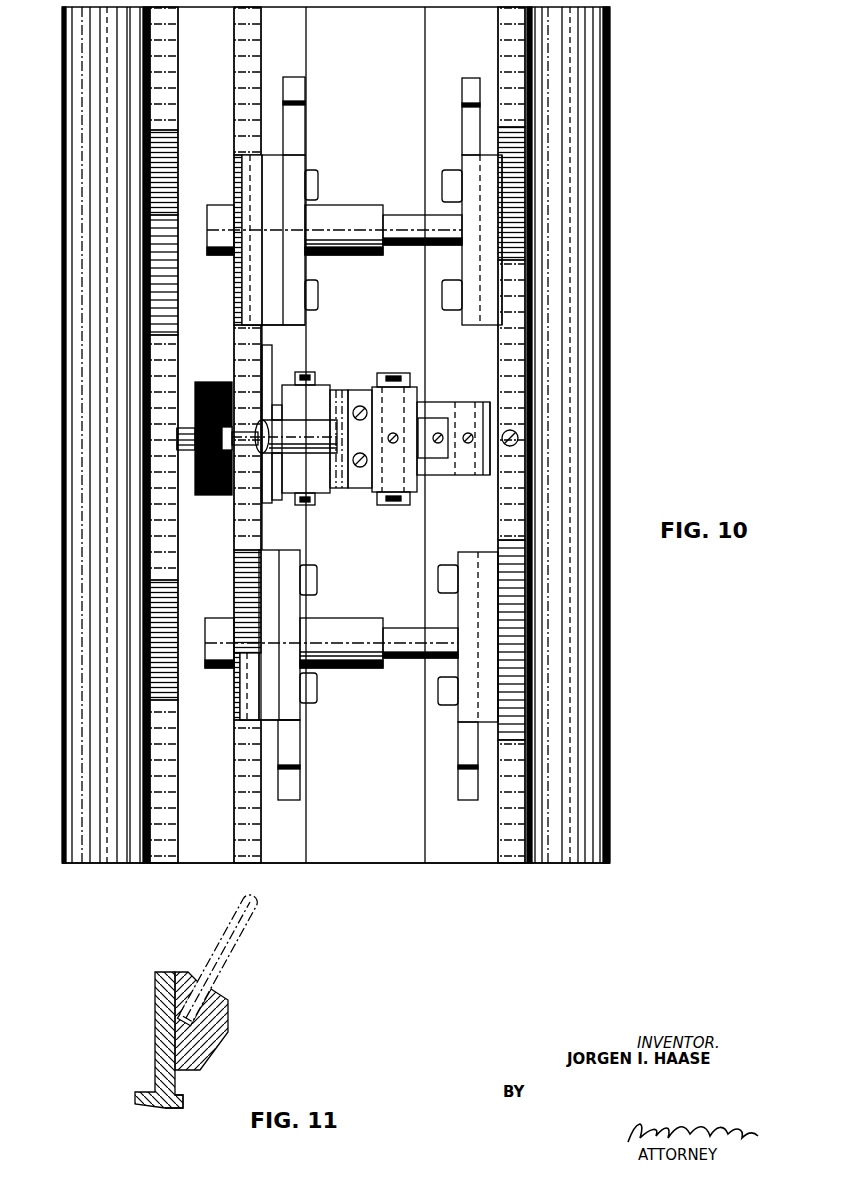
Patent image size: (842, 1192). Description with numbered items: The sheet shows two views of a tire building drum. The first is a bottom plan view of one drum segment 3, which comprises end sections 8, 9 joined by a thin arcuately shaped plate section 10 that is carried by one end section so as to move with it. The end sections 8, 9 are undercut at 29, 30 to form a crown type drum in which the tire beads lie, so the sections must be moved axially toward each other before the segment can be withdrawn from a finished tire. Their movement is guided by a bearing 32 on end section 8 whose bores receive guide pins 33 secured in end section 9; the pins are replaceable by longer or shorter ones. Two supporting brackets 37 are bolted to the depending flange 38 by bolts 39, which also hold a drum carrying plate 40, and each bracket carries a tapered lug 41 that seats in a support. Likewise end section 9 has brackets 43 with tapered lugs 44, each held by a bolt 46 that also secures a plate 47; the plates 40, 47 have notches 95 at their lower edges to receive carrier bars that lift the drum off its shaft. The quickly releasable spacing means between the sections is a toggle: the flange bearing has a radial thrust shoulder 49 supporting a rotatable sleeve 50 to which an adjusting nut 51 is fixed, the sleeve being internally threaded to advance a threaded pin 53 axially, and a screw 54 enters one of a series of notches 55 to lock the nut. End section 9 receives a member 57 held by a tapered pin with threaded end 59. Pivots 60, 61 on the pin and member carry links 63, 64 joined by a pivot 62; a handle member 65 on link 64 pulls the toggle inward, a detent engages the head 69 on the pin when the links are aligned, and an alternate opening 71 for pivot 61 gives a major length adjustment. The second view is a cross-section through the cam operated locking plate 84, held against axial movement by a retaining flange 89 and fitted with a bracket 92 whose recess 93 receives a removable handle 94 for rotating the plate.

In FIG. 10, the drum segment 3 is at (610, 222).
In FIG. 10, the end section 8 is at (72, 145).
In FIG. 10, the end section 9 is at (602, 145).
In FIG. 10, the plate section 10 is at (378, 858).
In FIG. 10, the undercut 29 is at (120, 523).
In FIG. 10, the undercut 30 is at (540, 685).
In FIG. 10, the bearing 32 is at (350, 245).
In FIG. 10, the guide pin 33 is at (398, 238).
In FIG. 10, the supporting bracket 37 is at (278, 313).
In FIG. 10, the depending flange 38 is at (243, 330).
In FIG. 10, the bolt 39 is at (318, 187).
In FIG. 10, the drum carrying plate 40 is at (300, 133).
In FIG. 10, the tapered lug 41 is at (250, 182).
In FIG. 10, the bracket 43 is at (485, 326).
In FIG. 10, the tapered lug 44 is at (470, 312).
In FIG. 10, the bolt 46 is at (445, 187).
In FIG. 10, the plate 47 is at (472, 85).
In FIG. 10, the radial thrust shoulder 49 is at (268, 390).
In FIG. 10, the rotatable sleeve 50 is at (276, 465).
In FIG. 10, the adjusting nut 51 is at (213, 383).
In FIG. 10, the threaded pin 53 is at (190, 447).
In FIG. 10, the screw 54 is at (235, 447).
In FIG. 10, the notches 55 is at (205, 420).
In FIG. 10, the member 57 is at (491, 430).
In FIG. 10, the threaded end 59 is at (510, 448).
In FIG. 10, the pivot 60 is at (312, 497).
In FIG. 10, the pivot 61 is at (470, 460).
In FIG. 10, the pivot 62 is at (392, 499).
In FIG. 10, the link 63 is at (336, 400).
In FIG. 10, the link 64 is at (443, 412).
In FIG. 10, the handle member 65 is at (262, 430).
In FIG. 10, the head 69 is at (316, 405).
In FIG. 10, the opening 71 is at (446, 460).
In FIG. 10, the notches 95 is at (300, 103).
In FIG. 11, the cam operated locking plate 84 is at (165, 1035).
In FIG. 11, the retaining flange 89 is at (173, 1108).
In FIG. 11, the bracket 92 is at (215, 1040).
In FIG. 11, the recess 93 is at (212, 992).
In FIG. 11, the removable handle 94 is at (230, 918).